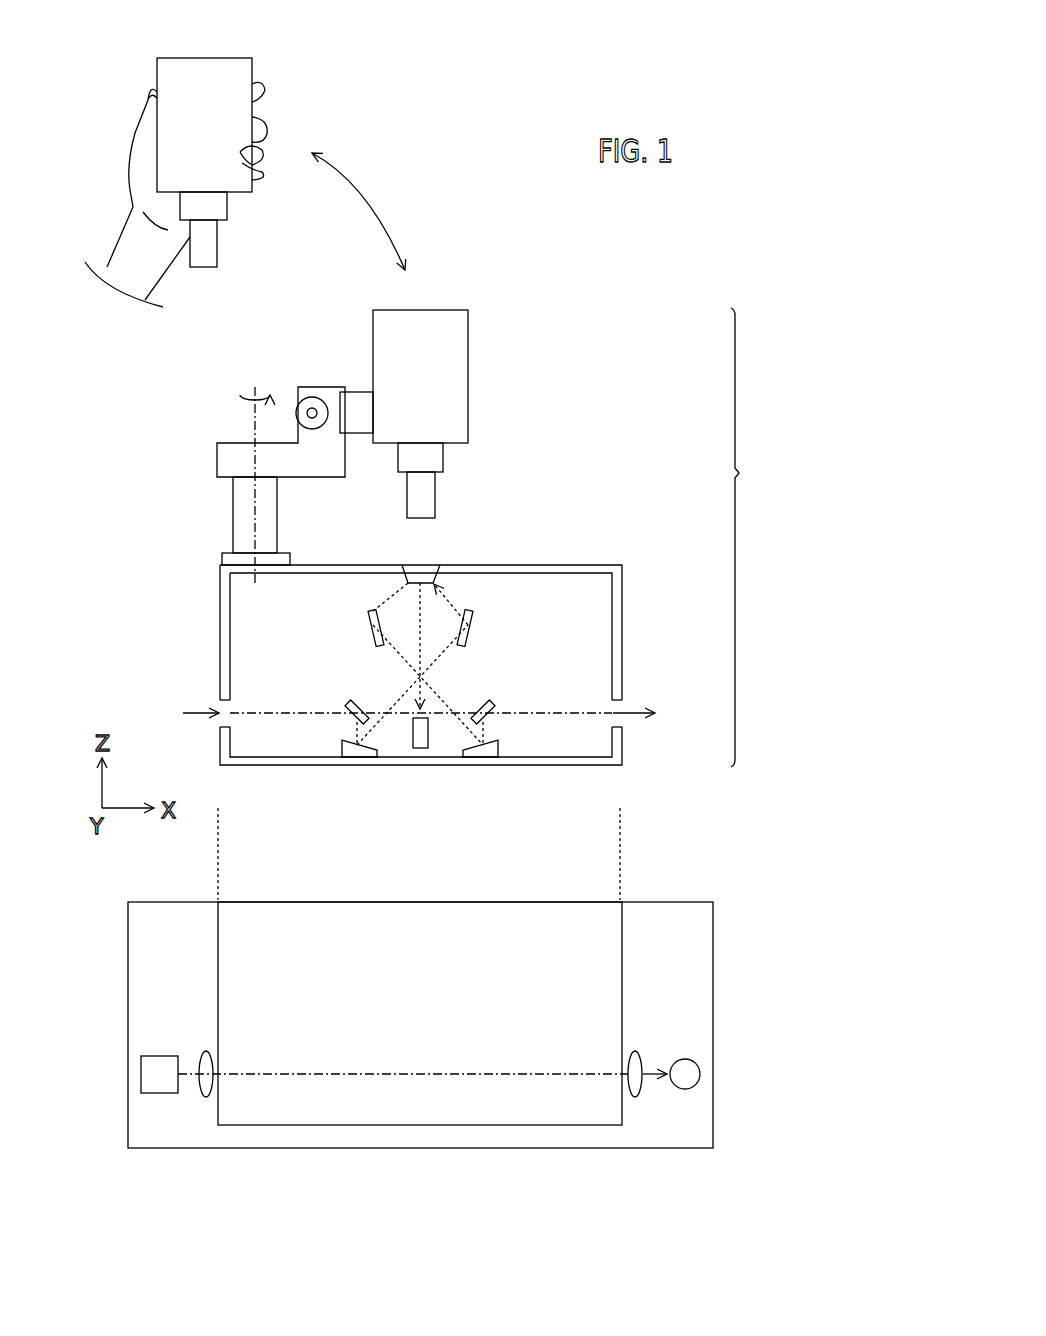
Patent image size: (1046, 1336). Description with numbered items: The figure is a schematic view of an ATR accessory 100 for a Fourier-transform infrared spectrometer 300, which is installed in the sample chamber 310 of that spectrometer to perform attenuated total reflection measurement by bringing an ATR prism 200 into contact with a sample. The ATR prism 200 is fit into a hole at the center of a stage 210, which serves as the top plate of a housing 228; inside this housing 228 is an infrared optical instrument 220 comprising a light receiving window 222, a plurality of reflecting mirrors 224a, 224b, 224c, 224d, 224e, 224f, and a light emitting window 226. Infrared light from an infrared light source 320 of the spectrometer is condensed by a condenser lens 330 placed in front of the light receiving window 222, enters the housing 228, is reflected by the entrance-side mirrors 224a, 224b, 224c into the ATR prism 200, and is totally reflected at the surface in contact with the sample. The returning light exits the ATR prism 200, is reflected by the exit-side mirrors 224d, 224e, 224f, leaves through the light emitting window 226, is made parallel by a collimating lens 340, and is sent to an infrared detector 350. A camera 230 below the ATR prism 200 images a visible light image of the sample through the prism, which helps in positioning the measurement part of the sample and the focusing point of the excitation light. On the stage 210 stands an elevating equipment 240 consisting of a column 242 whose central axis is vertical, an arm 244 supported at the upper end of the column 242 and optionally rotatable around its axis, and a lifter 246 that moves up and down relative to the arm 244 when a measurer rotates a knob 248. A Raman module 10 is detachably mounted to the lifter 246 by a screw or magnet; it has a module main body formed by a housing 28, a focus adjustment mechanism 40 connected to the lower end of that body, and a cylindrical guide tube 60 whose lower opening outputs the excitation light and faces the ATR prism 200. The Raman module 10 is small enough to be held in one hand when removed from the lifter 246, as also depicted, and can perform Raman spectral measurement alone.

The Raman module 10 is at (218, 144).
The housing 28 is at (447, 310).
The focus adjustment mechanism 40 is at (445, 458).
The guide tube 60 is at (437, 497).
The ATR accessory 100 is at (784, 537).
The ATR prism 200 is at (433, 562).
The stage 210 is at (577, 565).
The infrared optical instrument 220 is at (421, 705).
The light receiving window 222 is at (215, 698).
The reflecting mirror 224a is at (353, 705).
The reflecting mirror 224b is at (355, 758).
The reflecting mirror 224c is at (468, 618).
The reflecting mirror 224d is at (372, 617).
The reflecting mirror 224e is at (490, 758).
The reflecting mirror 224f is at (487, 705).
The light emitting window 226 is at (627, 703).
The housing 228 is at (623, 615).
The camera 230 is at (422, 750).
The elevating equipment 240 is at (229, 453).
The column 242 is at (230, 515).
The arm 244 is at (232, 443).
The lifter 246 is at (358, 400).
The knob 248 is at (296, 410).
The Fourier-transform infrared spectrometer 300 is at (461, 1060).
The sample chamber 310 is at (428, 1102).
The infrared light source 320 is at (153, 1095).
The condenser lens 330 is at (203, 1097).
The collimating lens 340 is at (637, 1097).
The infrared detector 350 is at (685, 1089).